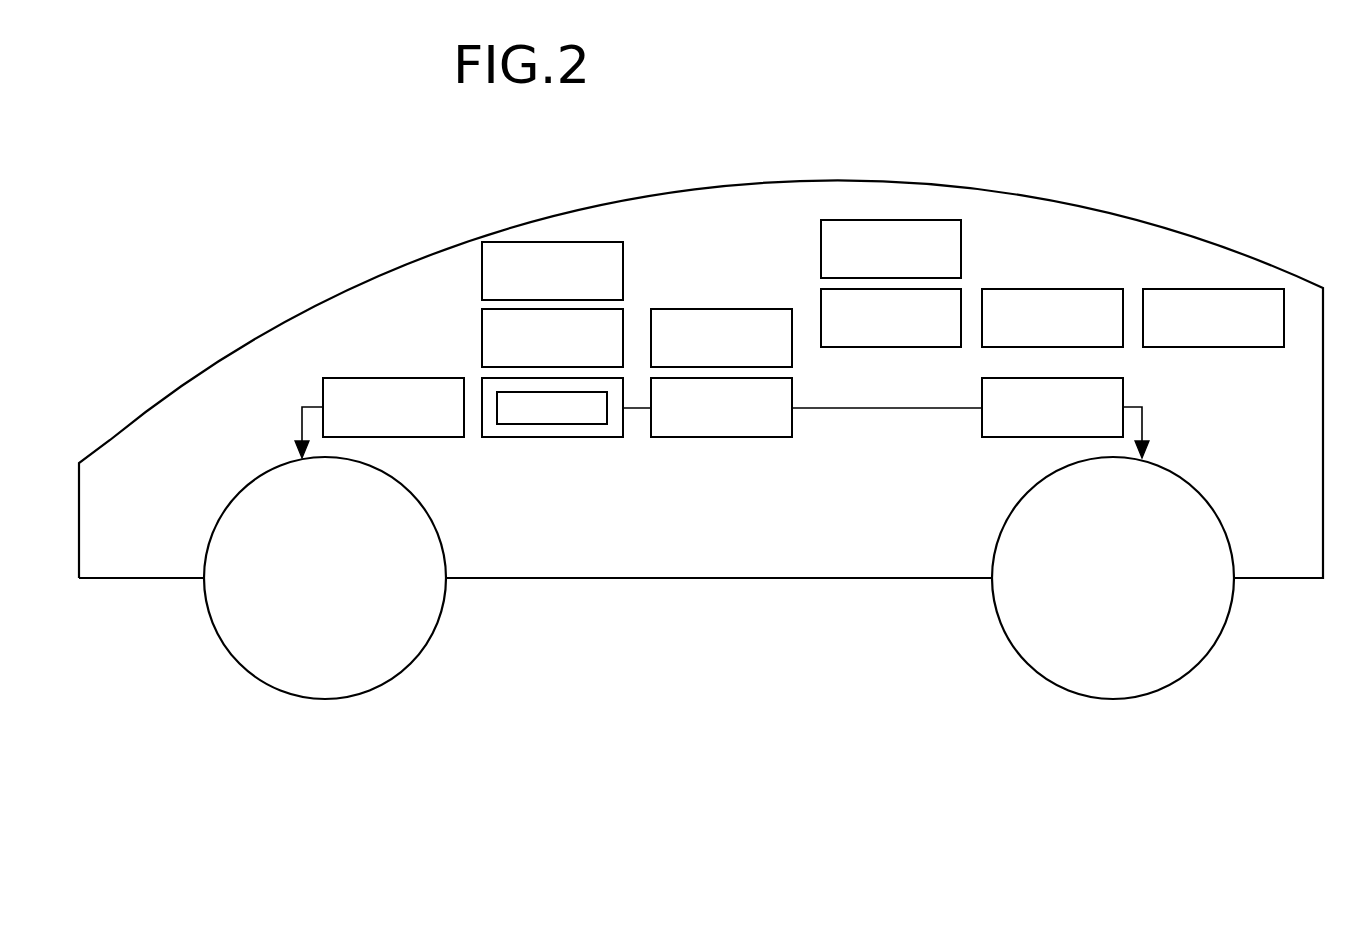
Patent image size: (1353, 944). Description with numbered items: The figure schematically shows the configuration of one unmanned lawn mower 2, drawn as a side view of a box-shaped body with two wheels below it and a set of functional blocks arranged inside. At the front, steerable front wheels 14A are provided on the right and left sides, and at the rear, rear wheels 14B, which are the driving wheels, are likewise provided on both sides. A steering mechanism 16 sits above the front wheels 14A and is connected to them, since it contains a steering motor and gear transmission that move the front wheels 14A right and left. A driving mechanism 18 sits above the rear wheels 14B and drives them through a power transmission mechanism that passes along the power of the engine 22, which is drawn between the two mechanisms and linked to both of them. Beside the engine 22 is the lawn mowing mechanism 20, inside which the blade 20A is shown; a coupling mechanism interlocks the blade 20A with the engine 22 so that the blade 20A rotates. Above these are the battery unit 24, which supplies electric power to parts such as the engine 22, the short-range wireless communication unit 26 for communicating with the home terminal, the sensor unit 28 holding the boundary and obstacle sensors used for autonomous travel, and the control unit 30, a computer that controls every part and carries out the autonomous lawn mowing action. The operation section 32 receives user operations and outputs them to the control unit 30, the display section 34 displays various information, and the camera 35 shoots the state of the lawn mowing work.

The unmanned lawn mower 2 is at (770, 117).
The front wheels 14A is at (323, 700).
The rear wheels 14B is at (1117, 700).
The steering mechanism 16 is at (402, 378).
The driving mechanism 18 is at (1123, 381).
The lawn mowing mechanism 20 is at (575, 438).
The blade 20A is at (510, 425).
The engine 22 is at (703, 438).
The battery unit 24 is at (1057, 288).
The short-range wireless communication unit 26 is at (878, 220).
The sensor unit 28 is at (710, 308).
The control unit 30 is at (870, 348).
The operation section 32 is at (480, 272).
The display section 34 is at (480, 342).
The camera 35 is at (1247, 350).